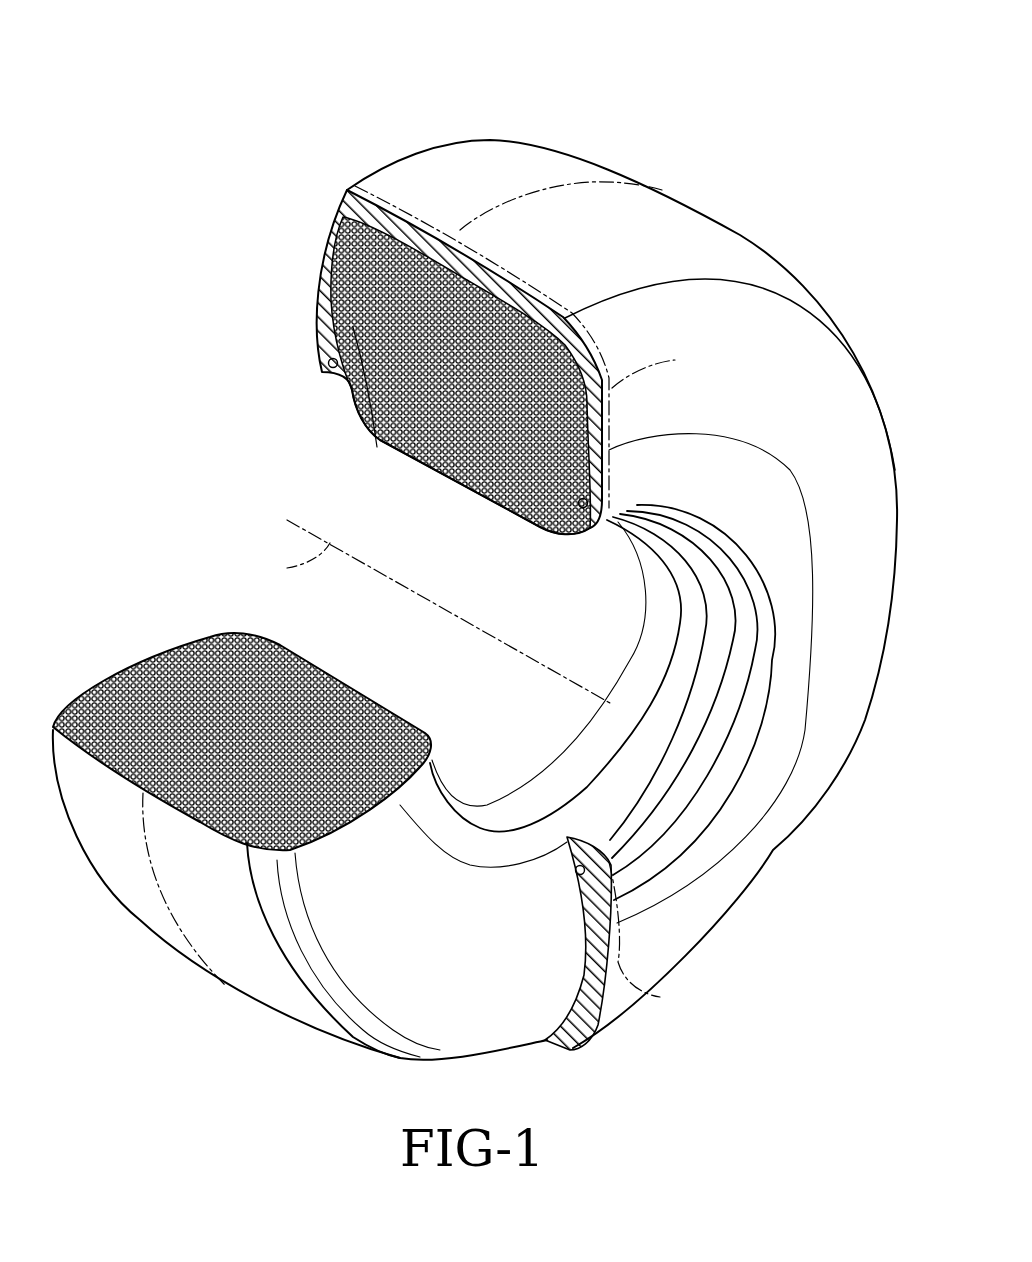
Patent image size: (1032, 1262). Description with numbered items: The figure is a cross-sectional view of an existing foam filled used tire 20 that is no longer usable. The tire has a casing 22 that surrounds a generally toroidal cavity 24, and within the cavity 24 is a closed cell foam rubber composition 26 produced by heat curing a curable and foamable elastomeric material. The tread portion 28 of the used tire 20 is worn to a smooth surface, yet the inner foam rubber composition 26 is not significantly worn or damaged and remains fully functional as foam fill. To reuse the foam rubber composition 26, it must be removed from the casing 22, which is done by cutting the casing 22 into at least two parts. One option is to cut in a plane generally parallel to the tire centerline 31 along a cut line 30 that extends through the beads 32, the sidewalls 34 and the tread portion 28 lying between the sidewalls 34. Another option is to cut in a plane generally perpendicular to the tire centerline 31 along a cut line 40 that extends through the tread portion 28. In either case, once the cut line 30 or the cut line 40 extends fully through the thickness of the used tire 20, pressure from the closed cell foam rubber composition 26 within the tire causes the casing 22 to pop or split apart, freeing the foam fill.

The foam filled used tire 20 is at (227, 115).
The casing 22 is at (318, 207).
The toroidal cavity 24 is at (377, 448).
The closed cell foam rubber composition 26 is at (443, 488).
The tread portion 28 is at (549, 296).
The cut line 30 is at (675, 360).
The tire centerline 31 is at (287, 568).
The beads 32 is at (324, 371).
The sidewalls 34 is at (800, 403).
The cut line 40 is at (540, 190).